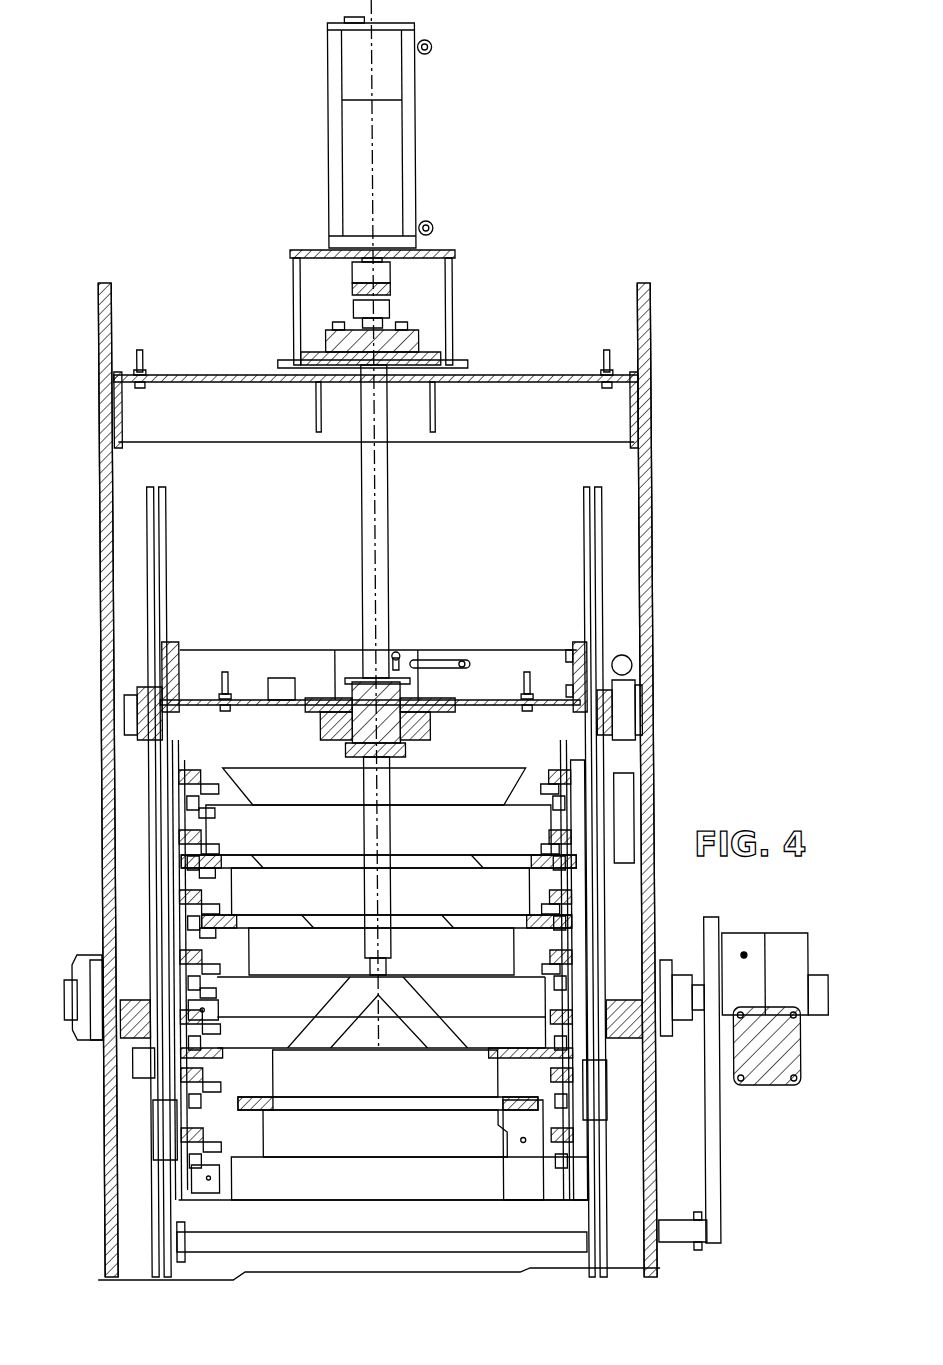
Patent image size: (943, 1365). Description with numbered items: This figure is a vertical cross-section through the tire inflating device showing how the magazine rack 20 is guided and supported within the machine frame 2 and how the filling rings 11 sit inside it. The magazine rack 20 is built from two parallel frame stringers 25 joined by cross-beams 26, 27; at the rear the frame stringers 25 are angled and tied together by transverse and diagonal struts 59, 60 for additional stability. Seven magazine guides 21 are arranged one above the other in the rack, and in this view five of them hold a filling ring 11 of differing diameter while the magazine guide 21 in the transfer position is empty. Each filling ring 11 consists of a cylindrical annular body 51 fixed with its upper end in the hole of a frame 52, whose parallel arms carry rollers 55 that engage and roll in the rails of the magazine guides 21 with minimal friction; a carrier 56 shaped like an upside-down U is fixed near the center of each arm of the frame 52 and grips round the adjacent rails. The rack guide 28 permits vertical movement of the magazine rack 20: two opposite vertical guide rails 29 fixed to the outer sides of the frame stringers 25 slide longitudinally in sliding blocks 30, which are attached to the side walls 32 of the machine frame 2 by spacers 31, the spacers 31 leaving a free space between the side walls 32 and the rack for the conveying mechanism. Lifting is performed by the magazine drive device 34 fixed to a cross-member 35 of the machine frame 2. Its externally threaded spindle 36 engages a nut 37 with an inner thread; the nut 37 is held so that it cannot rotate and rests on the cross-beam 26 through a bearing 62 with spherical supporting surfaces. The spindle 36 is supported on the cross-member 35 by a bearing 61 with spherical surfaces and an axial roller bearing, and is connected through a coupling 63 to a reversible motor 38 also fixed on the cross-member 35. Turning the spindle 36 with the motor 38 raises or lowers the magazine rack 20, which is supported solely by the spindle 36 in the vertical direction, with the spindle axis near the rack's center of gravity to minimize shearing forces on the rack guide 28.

The machine frame 2 is at (657, 490).
The filling ring 11 is at (457, 845).
The magazine rack 20 is at (443, 1206).
The magazine guide 21 is at (572, 995).
The frame stringer 25 is at (578, 682).
The cross-beam 26 is at (258, 665).
The cross-beam 27 is at (255, 1250).
The rack guide 28 is at (134, 764).
The guide rail 29 is at (603, 558).
The sliding block 30 is at (150, 712).
The spacer 31 is at (160, 725).
The side wall 32 is at (100, 606).
The magazine drive device 34 is at (474, 243).
The cross-member 35 is at (614, 425).
The spindle 36 is at (389, 497).
The nut 37 is at (366, 690).
The motor 38 is at (419, 137).
The annular body 51 is at (330, 1140).
The frame 52 is at (526, 1130).
The roller 55 is at (160, 1128).
The carrier 56 is at (606, 1110).
The strut 59 is at (490, 762).
The strut 60 is at (333, 1013).
The bearing 61 is at (421, 343).
The bearing 62 is at (355, 755).
The coupling 63 is at (393, 292).